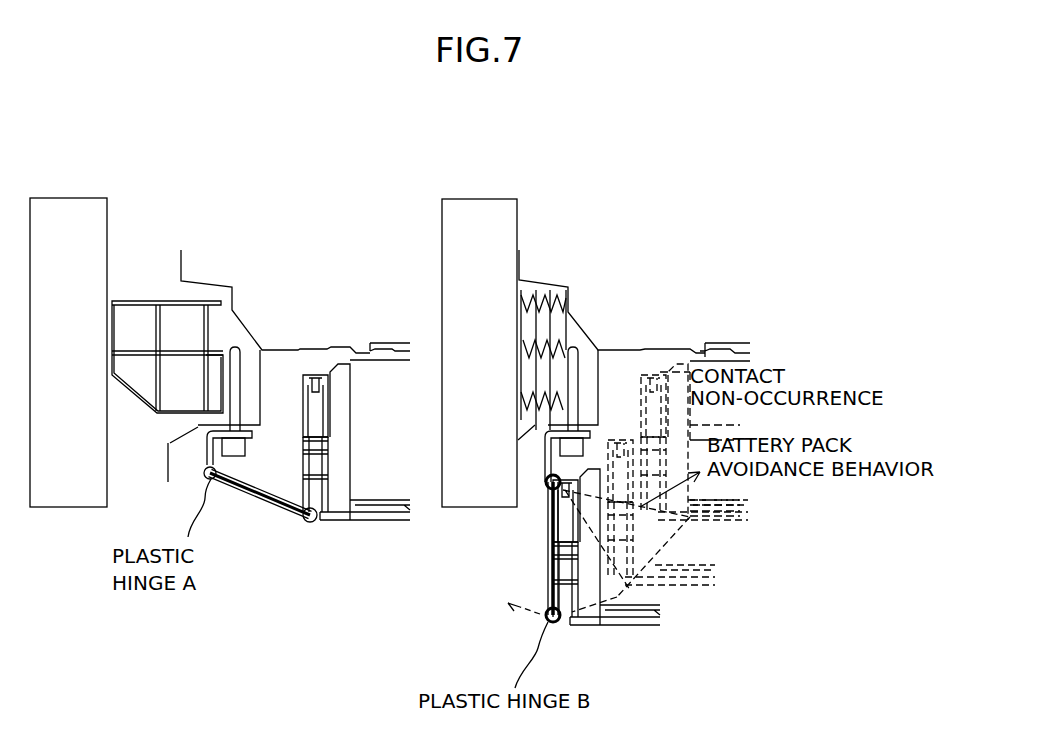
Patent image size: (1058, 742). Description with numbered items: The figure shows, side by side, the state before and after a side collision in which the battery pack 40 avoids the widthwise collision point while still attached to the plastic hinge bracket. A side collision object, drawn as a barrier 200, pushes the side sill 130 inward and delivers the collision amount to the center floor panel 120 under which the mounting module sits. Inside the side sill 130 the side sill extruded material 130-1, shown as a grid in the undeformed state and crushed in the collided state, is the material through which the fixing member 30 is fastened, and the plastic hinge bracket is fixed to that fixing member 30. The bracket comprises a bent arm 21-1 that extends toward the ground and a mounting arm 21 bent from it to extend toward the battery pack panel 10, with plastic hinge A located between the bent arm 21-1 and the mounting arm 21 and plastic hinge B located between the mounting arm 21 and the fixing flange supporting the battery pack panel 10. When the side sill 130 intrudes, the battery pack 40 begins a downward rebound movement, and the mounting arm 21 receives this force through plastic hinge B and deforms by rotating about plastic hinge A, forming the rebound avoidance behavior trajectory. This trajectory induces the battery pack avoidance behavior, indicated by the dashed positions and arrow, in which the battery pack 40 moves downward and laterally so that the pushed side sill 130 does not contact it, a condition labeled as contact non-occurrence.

The barrier 200 is at (273, 352).
The side sill extruded material 130-1 is at (155, 322).
The side sill 130 is at (235, 300).
The fixing member 30 is at (233, 392).
The bent arm 21-1 is at (207, 462).
The mounting arm 21 is at (272, 498).
The battery pack 40 is at (395, 405).
The center floor panel 120 is at (703, 357).
The battery pack panel 10 is at (372, 516).